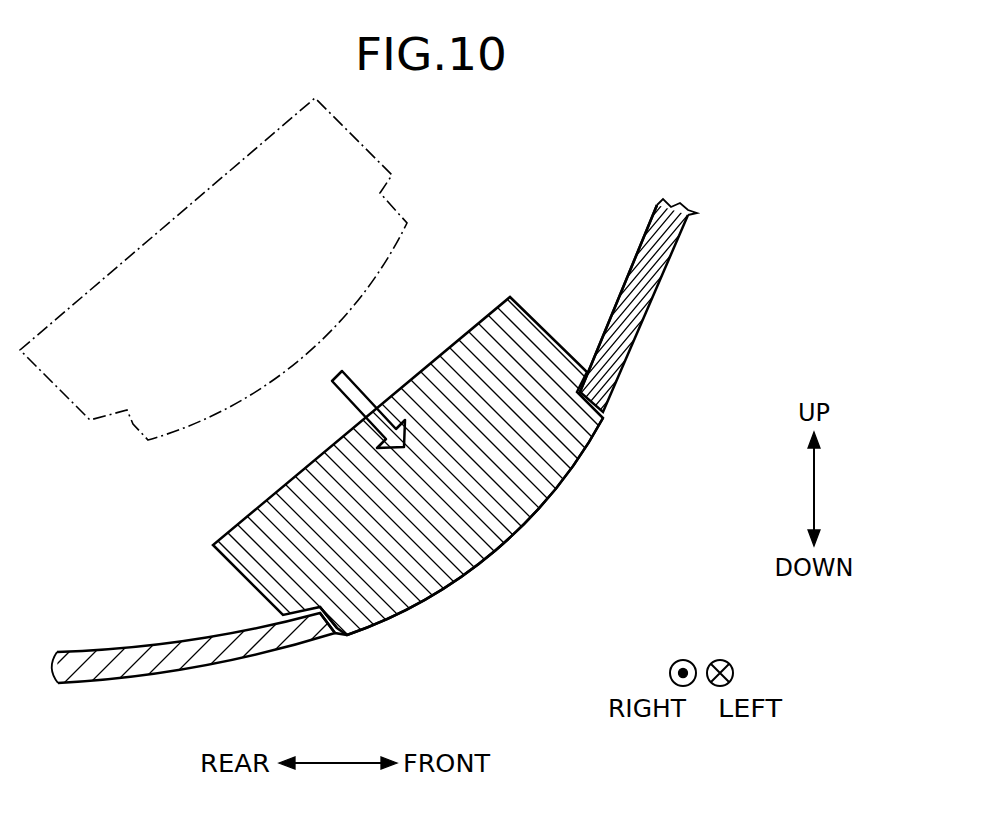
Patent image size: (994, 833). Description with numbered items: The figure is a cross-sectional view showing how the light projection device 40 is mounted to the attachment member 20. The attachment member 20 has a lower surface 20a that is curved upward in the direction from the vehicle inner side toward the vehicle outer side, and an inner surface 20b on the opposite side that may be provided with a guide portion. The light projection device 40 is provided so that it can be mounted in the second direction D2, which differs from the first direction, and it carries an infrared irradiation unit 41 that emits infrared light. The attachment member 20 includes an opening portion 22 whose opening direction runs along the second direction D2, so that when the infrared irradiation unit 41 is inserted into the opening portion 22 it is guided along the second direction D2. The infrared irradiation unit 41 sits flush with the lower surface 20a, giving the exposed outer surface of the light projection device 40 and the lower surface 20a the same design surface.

The attachment member 20 is at (661, 252).
The lower surface 20a is at (183, 672).
The inner surface 20b is at (624, 296).
The opening portion 22 is at (346, 634).
The light projection device 40 is at (513, 295).
The infrared irradiation unit 41 is at (573, 467).
The second direction D2 is at (360, 388).